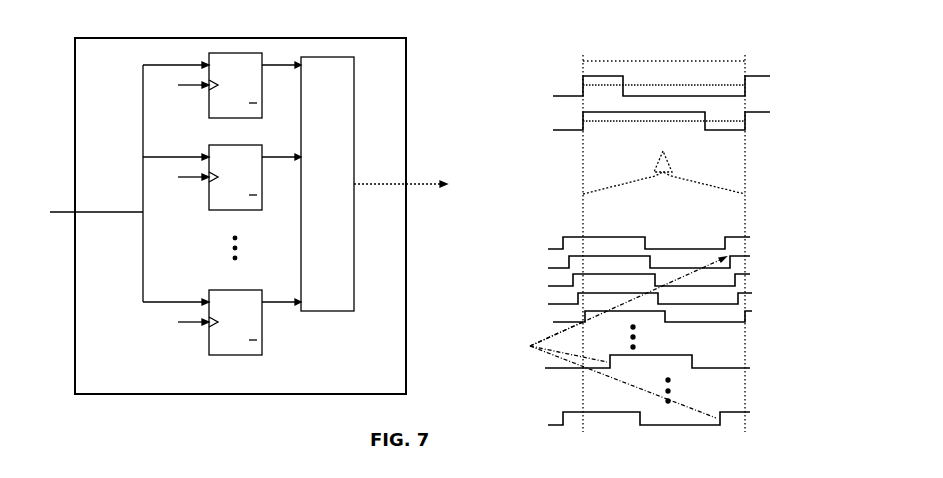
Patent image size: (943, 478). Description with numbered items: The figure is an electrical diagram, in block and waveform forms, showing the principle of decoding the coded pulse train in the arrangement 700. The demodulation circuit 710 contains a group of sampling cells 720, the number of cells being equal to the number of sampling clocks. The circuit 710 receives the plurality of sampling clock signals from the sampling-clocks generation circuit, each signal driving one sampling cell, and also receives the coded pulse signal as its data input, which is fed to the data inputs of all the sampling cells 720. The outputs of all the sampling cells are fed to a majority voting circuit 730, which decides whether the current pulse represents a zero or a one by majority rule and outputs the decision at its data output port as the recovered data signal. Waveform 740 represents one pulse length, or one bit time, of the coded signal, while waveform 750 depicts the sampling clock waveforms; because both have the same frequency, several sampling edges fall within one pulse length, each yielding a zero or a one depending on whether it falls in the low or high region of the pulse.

The ECDD demodulation system 700 is at (824, 392).
The ECDD demodulation circuit 710 is at (253, 203).
The sampling cells 720 is at (213, 119).
The majority voting circuit 730 is at (342, 317).
The waveform 740 is at (769, 60).
The waveform 750 is at (745, 232).